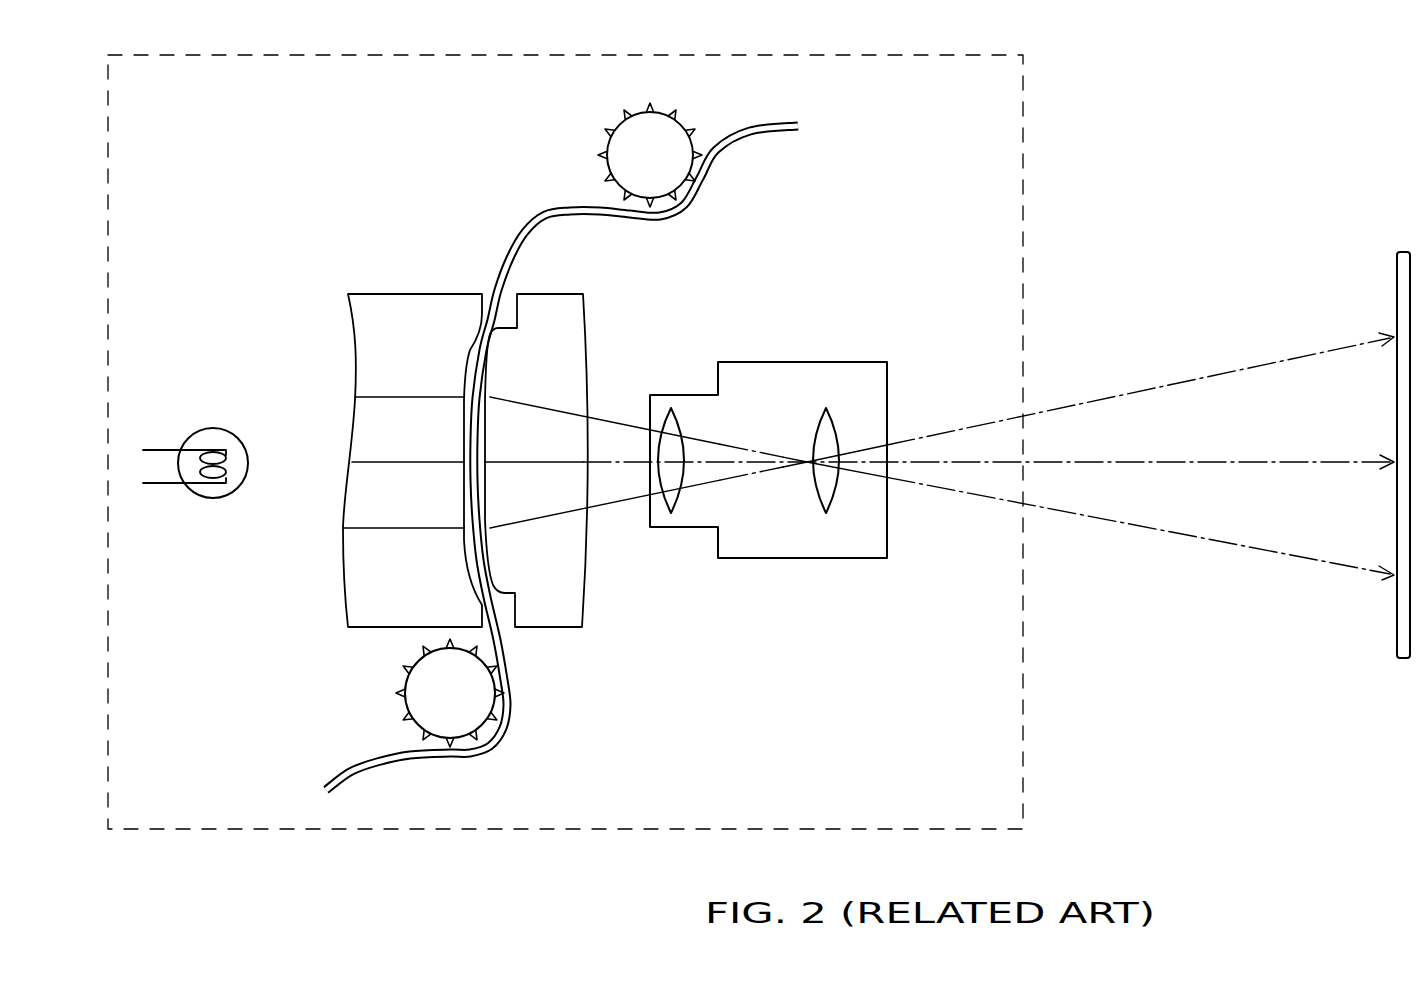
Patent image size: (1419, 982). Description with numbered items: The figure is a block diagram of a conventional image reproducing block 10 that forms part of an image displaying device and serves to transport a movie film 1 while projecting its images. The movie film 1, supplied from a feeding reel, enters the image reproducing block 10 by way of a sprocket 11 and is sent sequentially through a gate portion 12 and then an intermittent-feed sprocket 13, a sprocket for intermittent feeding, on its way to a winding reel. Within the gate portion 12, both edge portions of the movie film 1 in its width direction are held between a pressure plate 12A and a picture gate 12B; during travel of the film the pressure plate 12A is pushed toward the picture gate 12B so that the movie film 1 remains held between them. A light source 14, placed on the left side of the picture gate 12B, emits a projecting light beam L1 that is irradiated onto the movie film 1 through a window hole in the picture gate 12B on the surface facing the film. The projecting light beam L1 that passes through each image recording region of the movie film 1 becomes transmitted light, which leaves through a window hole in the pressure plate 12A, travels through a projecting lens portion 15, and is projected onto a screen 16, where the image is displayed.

The movie film 1 is at (733, 148).
The image reproducing block 10 is at (1023, 138).
The sprocket 11 is at (617, 127).
The gate portion 12 is at (453, 443).
The pressure plate 12A is at (558, 628).
The picture gate 12B is at (343, 560).
The intermittent-feed sprocket 13 is at (402, 680).
The light source 14 is at (213, 429).
The projecting lens portion 15 is at (783, 559).
The screen 16 is at (1395, 275).
The projecting light beam L1 is at (953, 428).